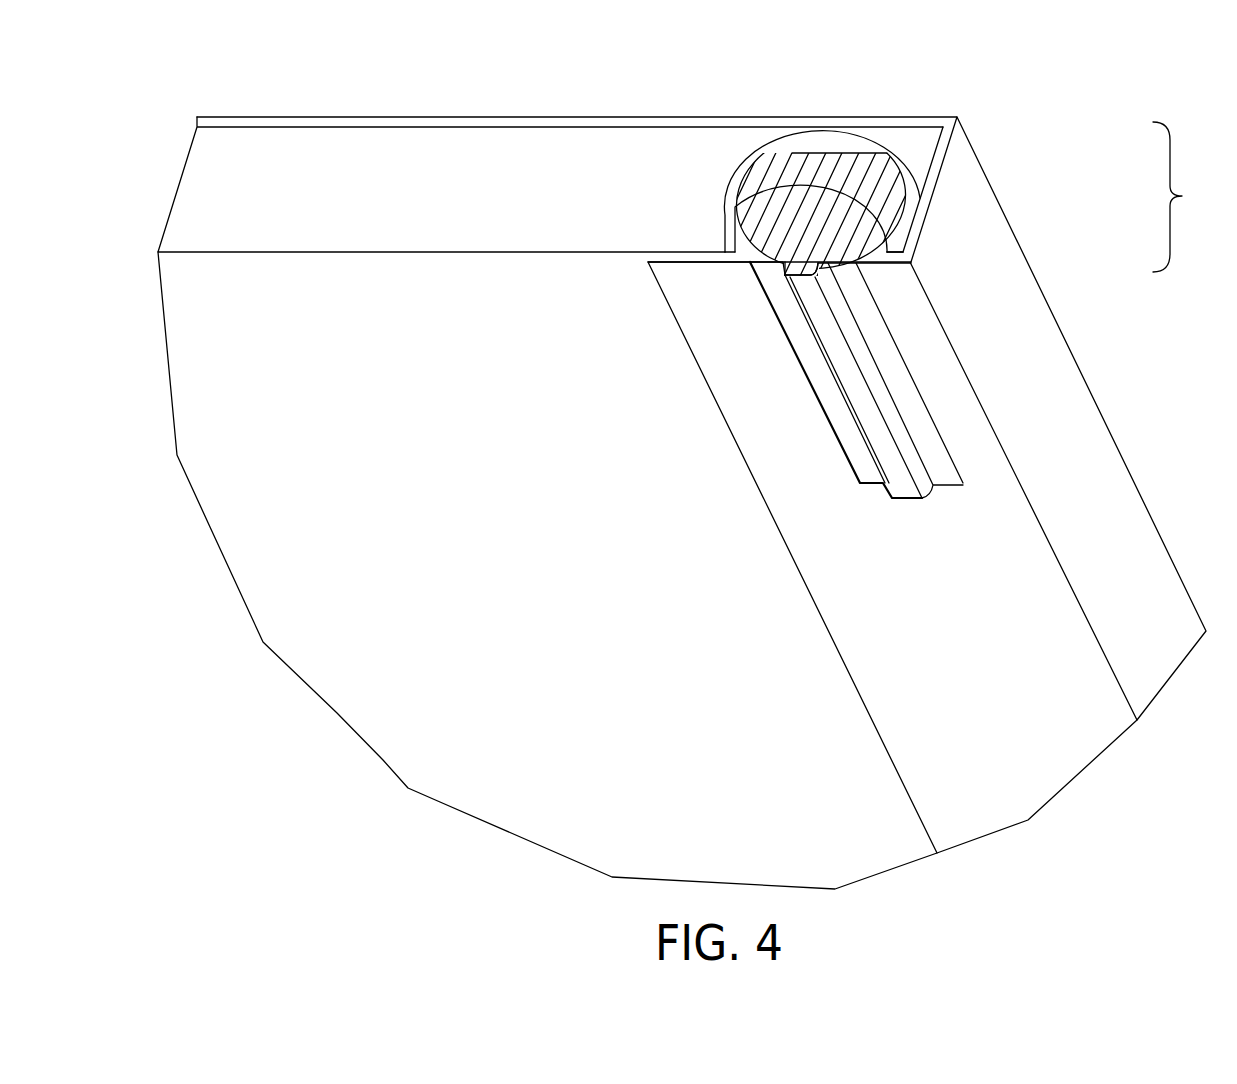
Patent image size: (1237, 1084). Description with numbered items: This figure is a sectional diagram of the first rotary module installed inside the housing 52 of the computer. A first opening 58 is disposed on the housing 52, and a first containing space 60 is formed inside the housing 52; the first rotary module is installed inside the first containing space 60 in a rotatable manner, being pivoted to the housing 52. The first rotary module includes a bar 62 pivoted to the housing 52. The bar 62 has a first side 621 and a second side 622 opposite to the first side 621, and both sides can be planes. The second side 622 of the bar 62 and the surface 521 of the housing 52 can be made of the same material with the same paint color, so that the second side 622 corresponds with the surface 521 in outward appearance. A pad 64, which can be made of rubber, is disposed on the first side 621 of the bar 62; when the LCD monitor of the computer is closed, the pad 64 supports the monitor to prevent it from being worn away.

The housing 52 is at (1178, 595).
The surface 521 is at (963, 433).
The first opening 58 is at (918, 387).
The first containing space 60 is at (849, 140).
The bar 62 is at (1187, 197).
The first side 621 is at (845, 263).
The second side 622 is at (862, 154).
The pad 64 is at (888, 463).